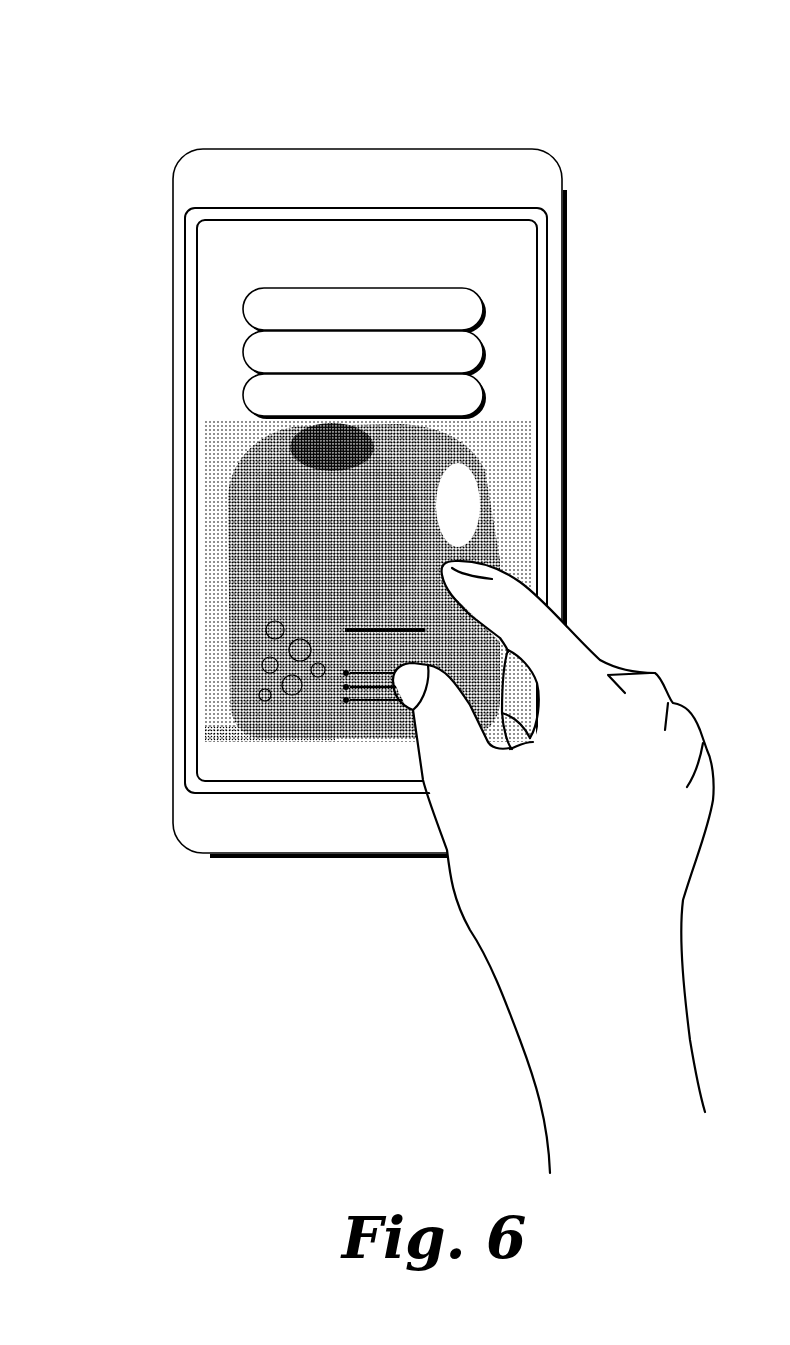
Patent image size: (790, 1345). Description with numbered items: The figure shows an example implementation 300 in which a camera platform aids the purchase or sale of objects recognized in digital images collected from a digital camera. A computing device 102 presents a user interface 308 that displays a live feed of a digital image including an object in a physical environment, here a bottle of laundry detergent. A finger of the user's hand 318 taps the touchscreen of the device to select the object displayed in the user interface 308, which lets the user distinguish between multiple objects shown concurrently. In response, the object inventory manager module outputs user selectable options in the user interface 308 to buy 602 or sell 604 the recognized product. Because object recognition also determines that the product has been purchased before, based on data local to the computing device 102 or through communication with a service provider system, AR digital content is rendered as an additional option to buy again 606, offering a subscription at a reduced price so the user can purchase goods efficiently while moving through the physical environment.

The example implementation 300 is at (130, 66).
The computing device 102 is at (370, 148).
The user interface 308 is at (421, 220).
The user's hand 318 is at (536, 900).
The buy option 602 is at (435, 318).
The sell option 604 is at (435, 361).
The buy again option 606 is at (467, 404).